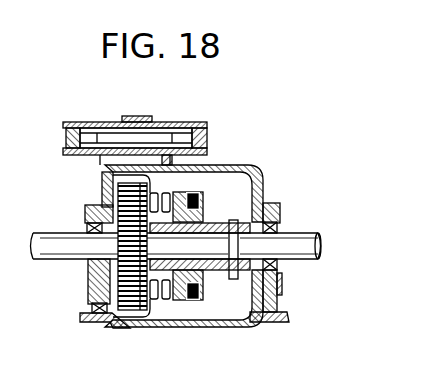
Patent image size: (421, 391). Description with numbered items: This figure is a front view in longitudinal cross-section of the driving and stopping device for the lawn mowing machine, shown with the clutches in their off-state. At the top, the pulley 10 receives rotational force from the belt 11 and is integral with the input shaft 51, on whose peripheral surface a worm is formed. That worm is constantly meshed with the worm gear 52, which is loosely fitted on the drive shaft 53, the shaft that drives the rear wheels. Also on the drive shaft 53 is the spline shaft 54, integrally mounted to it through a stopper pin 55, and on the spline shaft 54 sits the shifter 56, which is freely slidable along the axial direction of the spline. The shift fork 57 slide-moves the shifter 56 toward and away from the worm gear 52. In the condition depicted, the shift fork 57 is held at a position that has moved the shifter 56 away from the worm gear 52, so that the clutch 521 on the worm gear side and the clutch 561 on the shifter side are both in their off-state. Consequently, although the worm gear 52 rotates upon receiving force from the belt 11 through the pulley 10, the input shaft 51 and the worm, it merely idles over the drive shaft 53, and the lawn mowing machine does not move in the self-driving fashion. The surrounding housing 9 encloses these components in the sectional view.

The housing 9 is at (258, 167).
The pulley 10 is at (88, 122).
The belt 11 is at (206, 132).
The input shaft 51 is at (141, 116).
The worm gear 52 is at (112, 321).
The clutch 521 is at (126, 340).
The drive shaft 53 is at (58, 243).
The spline shaft 54 is at (233, 221).
The stopper pin 55 is at (273, 283).
The shifter 56 is at (178, 302).
The clutch 561 is at (168, 196).
The shift fork 57 is at (180, 192).